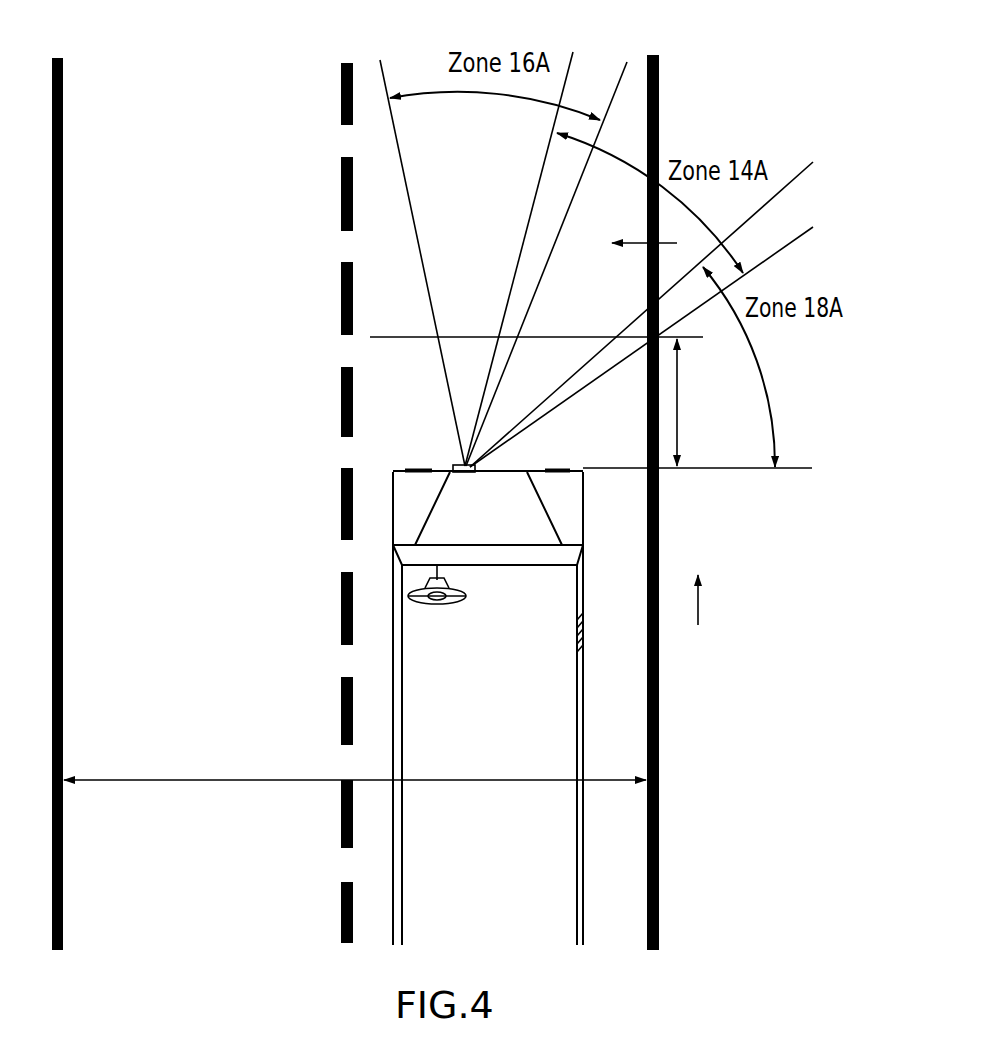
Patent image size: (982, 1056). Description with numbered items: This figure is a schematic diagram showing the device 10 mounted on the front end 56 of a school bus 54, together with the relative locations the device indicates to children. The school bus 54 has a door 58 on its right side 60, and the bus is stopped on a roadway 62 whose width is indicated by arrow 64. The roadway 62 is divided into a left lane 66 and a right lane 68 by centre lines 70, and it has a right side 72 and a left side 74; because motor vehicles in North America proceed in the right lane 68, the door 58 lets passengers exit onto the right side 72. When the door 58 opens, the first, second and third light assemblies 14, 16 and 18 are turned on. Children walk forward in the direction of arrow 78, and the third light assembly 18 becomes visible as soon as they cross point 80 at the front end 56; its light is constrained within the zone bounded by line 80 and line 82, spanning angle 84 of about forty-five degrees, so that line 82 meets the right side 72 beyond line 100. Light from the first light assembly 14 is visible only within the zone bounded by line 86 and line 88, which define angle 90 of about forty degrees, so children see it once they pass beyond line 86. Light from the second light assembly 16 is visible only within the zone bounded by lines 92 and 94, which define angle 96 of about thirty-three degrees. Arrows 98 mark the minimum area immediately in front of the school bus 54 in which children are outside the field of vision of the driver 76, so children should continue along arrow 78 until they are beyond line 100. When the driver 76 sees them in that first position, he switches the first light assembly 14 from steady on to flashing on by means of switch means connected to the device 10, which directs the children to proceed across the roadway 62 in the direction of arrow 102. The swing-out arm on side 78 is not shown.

The device 10 is at (457, 464).
The first light assembly 14 is at (485, 440).
The second light assembly 16 is at (463, 432).
The third light assembly 18 is at (503, 458).
The school bus 54 is at (407, 495).
The front end 56 is at (437, 467).
The door 58 is at (585, 648).
The right side 60 is at (585, 702).
The roadway 62 is at (85, 292).
The arrow 64 is at (355, 766).
The left lane 66 is at (214, 512).
The right lane 68 is at (386, 672).
The centre lines 70 is at (341, 827).
The right side 72 is at (660, 780).
The left side 74 is at (85, 553).
The driver 76 is at (447, 605).
The arrow 78 is at (392, 610).
The point 80 is at (716, 473).
The line 82 is at (660, 303).
The angle 84 is at (757, 367).
The line 86 is at (660, 337).
The line 88 is at (529, 245).
The angle 90 is at (650, 203).
The line 92 is at (553, 249).
The line 94 is at (413, 249).
The angle 96 is at (495, 91).
The arrows 98 is at (697, 402).
The line 100 is at (684, 340).
The arrow 102 is at (636, 226).